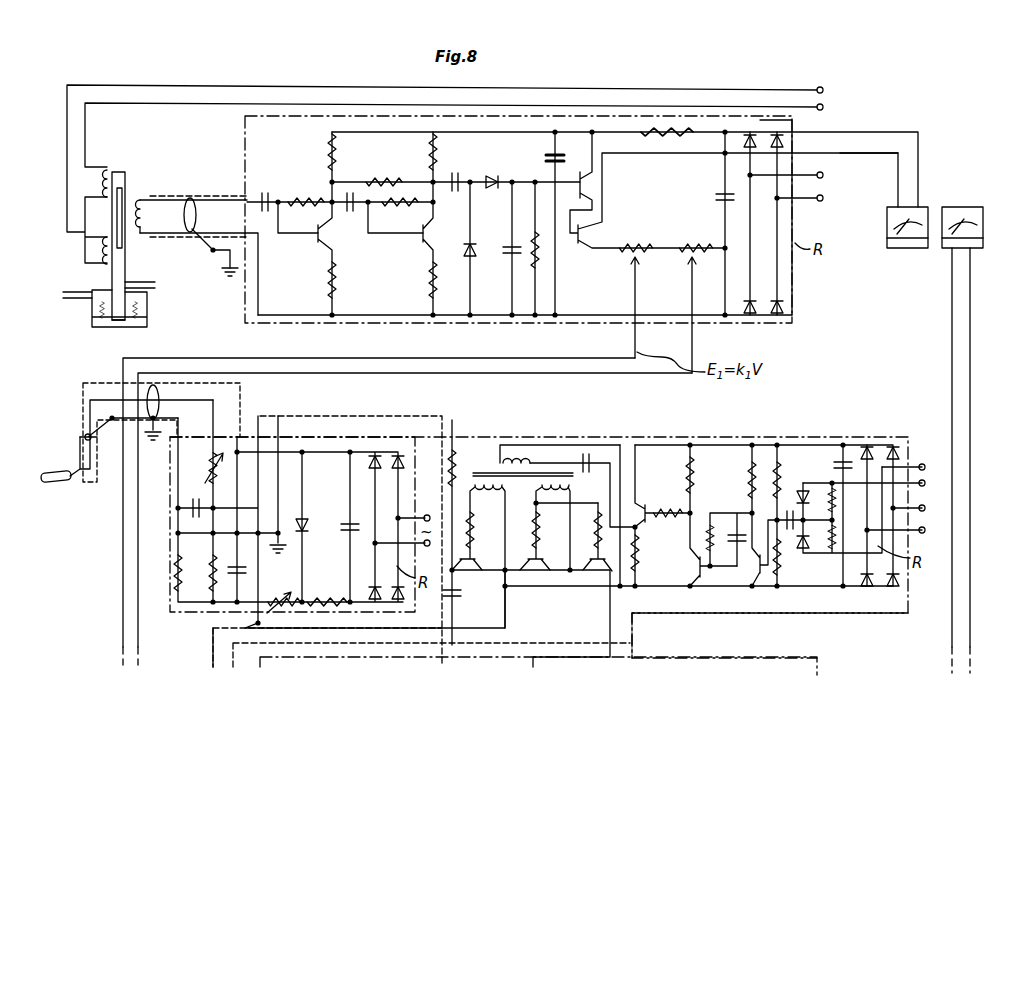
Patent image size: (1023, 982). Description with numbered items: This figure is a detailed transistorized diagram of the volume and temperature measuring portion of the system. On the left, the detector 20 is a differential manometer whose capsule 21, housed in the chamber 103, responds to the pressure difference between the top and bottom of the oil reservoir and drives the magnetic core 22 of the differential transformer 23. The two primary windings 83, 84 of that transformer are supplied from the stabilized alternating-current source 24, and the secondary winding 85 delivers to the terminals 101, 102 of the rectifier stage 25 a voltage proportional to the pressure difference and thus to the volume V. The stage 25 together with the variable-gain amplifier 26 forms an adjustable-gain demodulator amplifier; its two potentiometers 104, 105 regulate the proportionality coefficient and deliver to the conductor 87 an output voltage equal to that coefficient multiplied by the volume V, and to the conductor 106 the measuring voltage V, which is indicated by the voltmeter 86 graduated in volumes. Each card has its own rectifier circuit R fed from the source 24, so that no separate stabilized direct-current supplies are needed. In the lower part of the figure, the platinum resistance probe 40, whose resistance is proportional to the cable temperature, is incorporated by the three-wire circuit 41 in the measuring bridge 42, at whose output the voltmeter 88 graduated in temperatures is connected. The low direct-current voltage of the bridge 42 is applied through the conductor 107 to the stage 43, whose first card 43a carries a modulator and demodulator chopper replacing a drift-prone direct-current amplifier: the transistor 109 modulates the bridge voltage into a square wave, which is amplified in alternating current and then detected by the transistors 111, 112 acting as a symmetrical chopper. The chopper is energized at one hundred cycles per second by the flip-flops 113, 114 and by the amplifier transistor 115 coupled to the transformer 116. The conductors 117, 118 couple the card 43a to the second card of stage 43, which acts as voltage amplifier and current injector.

The detector 20 is at (92, 324).
The capsule 21 is at (126, 322).
The magnetic core 22 is at (122, 190).
The differential transformer 23 is at (125, 173).
The stabilized source 24 is at (818, 100).
The rectifier stage 25 is at (538, 110).
The variable-gain amplifier 26 is at (792, 270).
The probe 40 is at (62, 472).
The 3-wire circuit 41 is at (94, 454).
The measuring bridge 42 is at (170, 470).
The stage 43 is at (716, 628).
The first card 43a is at (630, 452).
The primary winding 83 is at (102, 170).
The primary winding 84 is at (100, 249).
The secondary winding 85 is at (141, 201).
The voltmeter 86 is at (920, 207).
The conductor 87 is at (569, 360).
The voltmeter 88 is at (968, 207).
The terminal 101 is at (218, 199).
The terminal 102 is at (226, 233).
The chamber 103 is at (96, 308).
The potentiometer 104 is at (637, 248).
The potentiometer 105 is at (694, 248).
The conductor 106 is at (848, 153).
The conductor 107 is at (356, 416).
The transistor 109 is at (473, 557).
The transistor 111 is at (533, 557).
The transistor 112 is at (592, 549).
The flip-flop 113 is at (698, 560).
The flip-flop 114 is at (758, 568).
The transistor 115 is at (648, 507).
The transformer 116 is at (572, 479).
The conductor 117 is at (220, 630).
The conductor 118 is at (213, 650).